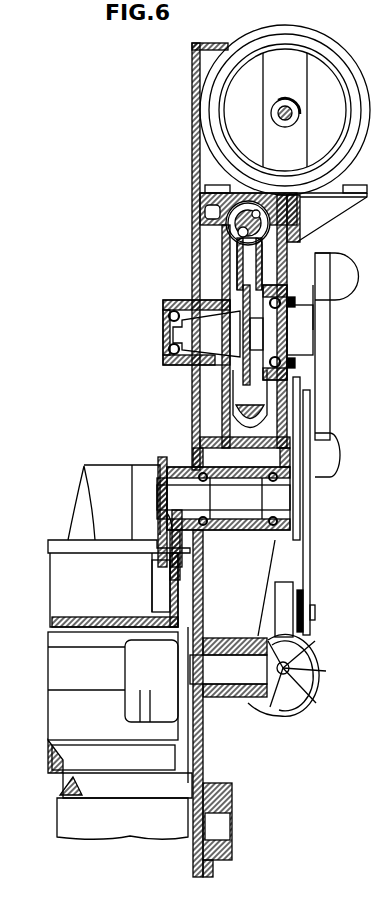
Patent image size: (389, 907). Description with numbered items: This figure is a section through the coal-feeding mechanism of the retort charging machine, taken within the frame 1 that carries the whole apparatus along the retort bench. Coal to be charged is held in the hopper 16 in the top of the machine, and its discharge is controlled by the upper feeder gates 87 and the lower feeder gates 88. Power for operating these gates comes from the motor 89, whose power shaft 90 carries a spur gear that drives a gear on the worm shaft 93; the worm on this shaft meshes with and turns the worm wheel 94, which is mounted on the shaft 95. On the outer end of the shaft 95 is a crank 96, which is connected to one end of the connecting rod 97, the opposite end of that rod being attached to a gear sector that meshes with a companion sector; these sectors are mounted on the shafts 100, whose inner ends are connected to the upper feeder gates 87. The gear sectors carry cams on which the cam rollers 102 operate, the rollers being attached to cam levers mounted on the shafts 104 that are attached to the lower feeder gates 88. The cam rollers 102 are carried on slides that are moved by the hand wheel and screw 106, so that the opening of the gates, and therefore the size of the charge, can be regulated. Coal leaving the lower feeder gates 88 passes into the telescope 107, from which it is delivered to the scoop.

The frame 1 is at (196, 153).
The motor 89 is at (338, 43).
The power shaft 90 is at (291, 116).
The worm shaft 93 is at (232, 226).
The worm wheel 94 is at (266, 252).
The shaft 95 is at (213, 332).
The crank 96 is at (306, 309).
The connecting rod 97 is at (331, 352).
The hopper 16 is at (167, 450).
The shafts 100 is at (223, 498).
The upper feeder gates 87 is at (114, 546).
The lower feeder gates 88 is at (118, 705).
The shafts 104 is at (232, 618).
The hand wheel and screw 106 is at (338, 672).
The cam rollers 102 is at (314, 602).
The telescope 107 is at (122, 818).